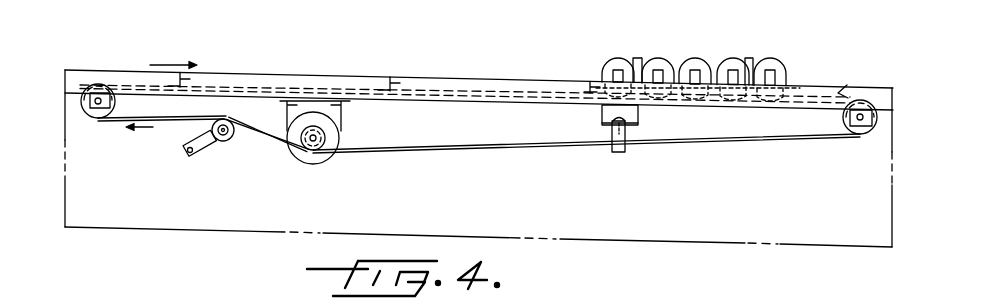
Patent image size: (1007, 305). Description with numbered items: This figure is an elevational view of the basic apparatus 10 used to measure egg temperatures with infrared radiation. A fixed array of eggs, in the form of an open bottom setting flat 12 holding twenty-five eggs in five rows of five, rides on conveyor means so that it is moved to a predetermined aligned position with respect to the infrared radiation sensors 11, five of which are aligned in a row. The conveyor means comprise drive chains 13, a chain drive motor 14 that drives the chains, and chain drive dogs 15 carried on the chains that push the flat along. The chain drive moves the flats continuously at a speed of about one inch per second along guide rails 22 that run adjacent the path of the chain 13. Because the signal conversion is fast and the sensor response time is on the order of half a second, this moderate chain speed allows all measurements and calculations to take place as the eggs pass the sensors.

The apparatus 10 is at (654, 37).
The infrared radiation sensors 11 is at (611, 133).
The open bottom setting flat 12 is at (797, 77).
The drive chains 13 is at (843, 87).
The chain drive motor 14 is at (293, 153).
The chain drive dogs 15 is at (207, 69).
The guide rails 22 is at (482, 100).